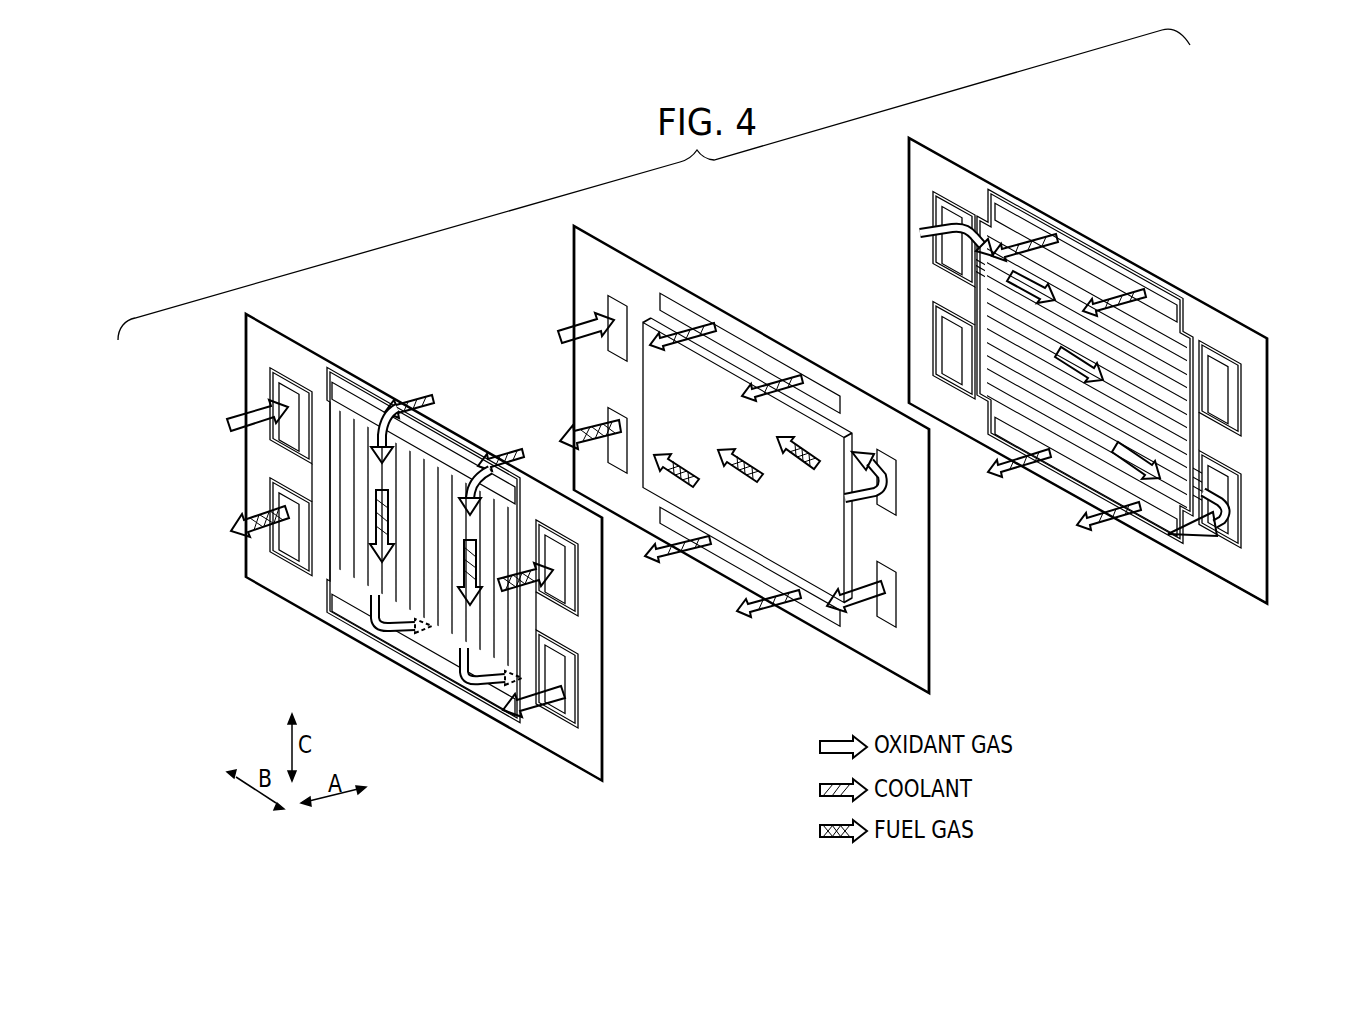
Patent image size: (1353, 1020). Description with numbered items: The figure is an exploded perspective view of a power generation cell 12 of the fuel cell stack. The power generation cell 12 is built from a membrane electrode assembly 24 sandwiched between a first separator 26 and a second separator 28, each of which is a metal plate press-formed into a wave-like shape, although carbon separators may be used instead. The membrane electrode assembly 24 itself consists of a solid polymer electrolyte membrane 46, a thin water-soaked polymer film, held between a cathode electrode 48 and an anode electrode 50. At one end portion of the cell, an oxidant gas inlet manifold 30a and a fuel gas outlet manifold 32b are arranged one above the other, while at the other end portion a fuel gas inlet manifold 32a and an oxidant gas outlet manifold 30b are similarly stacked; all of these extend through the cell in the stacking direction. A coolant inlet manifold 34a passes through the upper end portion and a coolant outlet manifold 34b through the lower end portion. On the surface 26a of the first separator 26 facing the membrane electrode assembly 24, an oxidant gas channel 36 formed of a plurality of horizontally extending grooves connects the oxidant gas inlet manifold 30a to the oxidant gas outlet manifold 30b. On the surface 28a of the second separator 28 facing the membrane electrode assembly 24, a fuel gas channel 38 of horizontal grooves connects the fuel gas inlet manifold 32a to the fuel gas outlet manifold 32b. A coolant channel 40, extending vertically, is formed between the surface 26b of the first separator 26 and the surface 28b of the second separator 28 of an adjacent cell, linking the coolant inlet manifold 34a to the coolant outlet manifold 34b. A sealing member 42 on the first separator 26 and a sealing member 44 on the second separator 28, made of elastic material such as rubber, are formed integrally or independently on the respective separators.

The power generation cell 12 is at (680, 210).
The membrane electrode assembly 24 is at (564, 247).
The first separator 26 is at (898, 150).
The surface of the first separator 26a is at (1205, 545).
The surface of the first separator 26b is at (1245, 566).
The second separator 28 is at (238, 343).
The surface of the second separator 28a is at (580, 752).
The surface of the second separator 28b is at (540, 725).
The oxidant gas inlet manifold 30a is at (280, 378).
The oxidant gas outlet manifold 30b is at (565, 695).
The fuel gas inlet manifold 32a is at (565, 583).
The fuel gas outlet manifold 32b is at (282, 500).
The coolant inlet manifold 34a is at (345, 393).
The coolant outlet manifold 34b is at (410, 645).
The oxidant gas channel 36 is at (1065, 420).
The fuel gas channel 38 is at (436, 419).
The coolant channel 40 is at (347, 558).
The sealing member 42 is at (1028, 207).
The sealing member 44 is at (467, 444).
The solid polymer electrolyte membrane 46 is at (895, 660).
The cathode electrode 48 is at (720, 385).
The anode electrode 50 is at (660, 381).